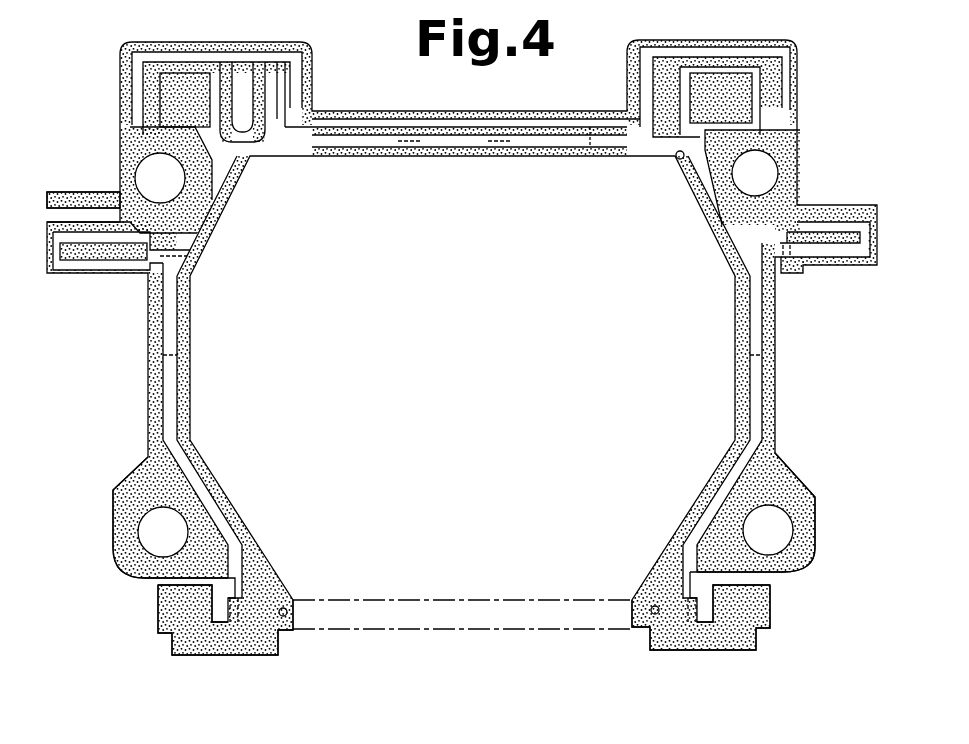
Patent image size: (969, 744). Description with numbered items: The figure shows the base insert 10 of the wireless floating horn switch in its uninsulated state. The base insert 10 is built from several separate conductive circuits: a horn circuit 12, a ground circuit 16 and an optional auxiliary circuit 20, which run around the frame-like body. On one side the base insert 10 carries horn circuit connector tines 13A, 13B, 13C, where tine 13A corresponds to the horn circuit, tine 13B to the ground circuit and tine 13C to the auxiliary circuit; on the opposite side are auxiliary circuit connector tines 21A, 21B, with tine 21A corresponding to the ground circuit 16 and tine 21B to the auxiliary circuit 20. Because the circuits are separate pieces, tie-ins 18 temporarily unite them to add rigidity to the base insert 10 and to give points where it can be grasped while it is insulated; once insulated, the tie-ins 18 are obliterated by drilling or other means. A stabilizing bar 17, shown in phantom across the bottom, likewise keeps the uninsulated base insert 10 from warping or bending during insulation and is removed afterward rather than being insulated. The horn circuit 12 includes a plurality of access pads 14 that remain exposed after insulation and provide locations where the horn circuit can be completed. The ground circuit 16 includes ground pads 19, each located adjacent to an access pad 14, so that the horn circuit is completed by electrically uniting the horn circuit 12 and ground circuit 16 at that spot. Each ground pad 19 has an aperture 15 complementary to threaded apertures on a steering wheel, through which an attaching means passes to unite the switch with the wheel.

The base insert 10 is at (190, 392).
The horn circuit 12 is at (183, 320).
The horn circuit connector tine 13A is at (108, 260).
The horn circuit connector tine 13B is at (52, 275).
The horn circuit connector tine 13C is at (45, 200).
The access pad 14 is at (178, 612).
The aperture 15 is at (150, 530).
The ground circuit 16 is at (150, 357).
The stabilizing bar 17 is at (568, 632).
The tie-in 18 is at (492, 142).
The ground pad 19 is at (140, 480).
The auxiliary circuit 20 is at (592, 118).
The auxiliary circuit connector tine 21A is at (848, 266).
The auxiliary circuit connector tine 21B is at (828, 205).